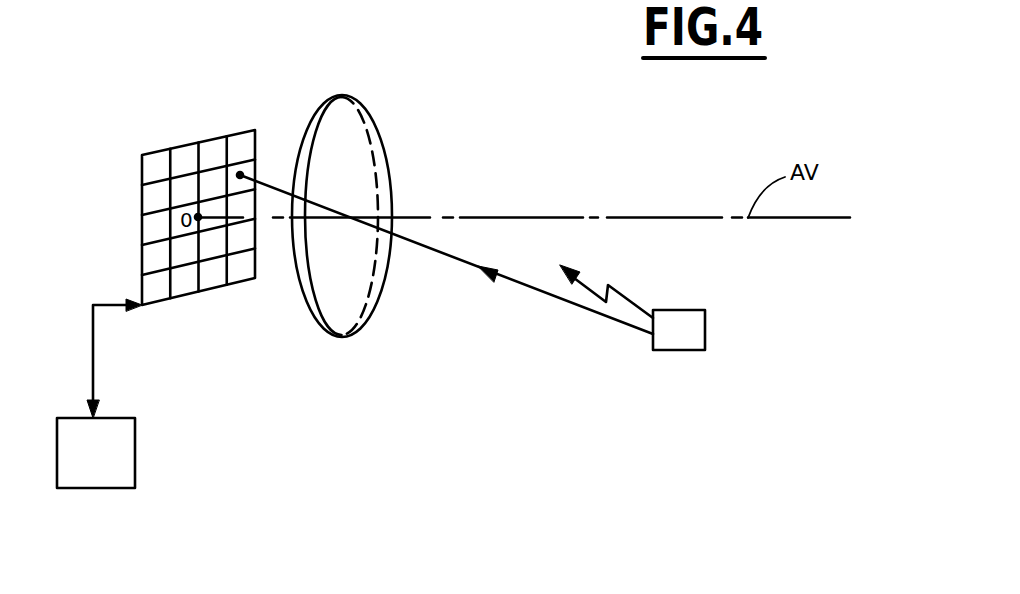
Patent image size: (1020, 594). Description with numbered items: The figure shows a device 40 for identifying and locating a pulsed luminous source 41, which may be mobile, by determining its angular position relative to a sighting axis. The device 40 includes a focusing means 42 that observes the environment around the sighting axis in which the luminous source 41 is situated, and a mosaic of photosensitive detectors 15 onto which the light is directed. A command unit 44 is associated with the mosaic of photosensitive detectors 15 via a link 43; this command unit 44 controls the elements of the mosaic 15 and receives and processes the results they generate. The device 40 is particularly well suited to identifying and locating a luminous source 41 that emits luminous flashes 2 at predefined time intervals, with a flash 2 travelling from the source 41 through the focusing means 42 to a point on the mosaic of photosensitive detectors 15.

The device for identifying and locating a pulsed luminous source 40 is at (122, 160).
The mosaic of photosensitive detectors 15 is at (246, 172).
The focusing means 42 is at (378, 134).
The luminous flashes 2 is at (637, 325).
The pulsed luminous source 41 is at (690, 335).
The link 43 is at (93, 357).
The command unit 44 is at (115, 462).